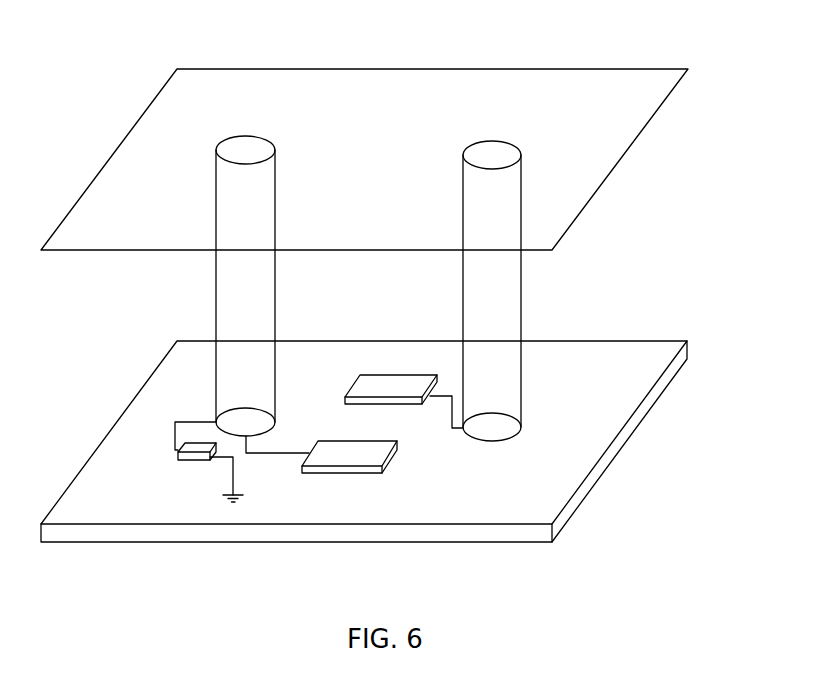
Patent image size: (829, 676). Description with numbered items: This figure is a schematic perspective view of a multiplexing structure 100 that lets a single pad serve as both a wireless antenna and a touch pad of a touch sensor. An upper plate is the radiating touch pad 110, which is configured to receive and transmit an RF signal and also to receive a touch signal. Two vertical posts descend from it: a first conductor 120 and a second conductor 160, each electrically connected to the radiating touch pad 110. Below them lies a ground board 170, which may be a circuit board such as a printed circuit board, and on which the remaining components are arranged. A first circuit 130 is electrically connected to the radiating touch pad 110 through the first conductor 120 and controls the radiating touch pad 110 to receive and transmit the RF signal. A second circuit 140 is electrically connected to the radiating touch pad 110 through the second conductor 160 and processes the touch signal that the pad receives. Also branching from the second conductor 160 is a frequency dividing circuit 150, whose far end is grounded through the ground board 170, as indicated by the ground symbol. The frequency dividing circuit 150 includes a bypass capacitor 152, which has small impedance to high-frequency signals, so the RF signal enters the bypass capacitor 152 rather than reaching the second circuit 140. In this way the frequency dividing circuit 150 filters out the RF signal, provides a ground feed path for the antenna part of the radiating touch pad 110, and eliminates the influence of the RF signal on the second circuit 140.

The multiplexing structure 100 is at (389, 52).
The radiating touch pad 110 is at (580, 168).
The first conductor 120 is at (482, 313).
The first circuit 130 is at (392, 385).
The second circuit 140 is at (373, 457).
The frequency dividing circuit 150 is at (284, 499).
The bypass capacitor 152 is at (197, 460).
The second conductor 160 is at (244, 305).
The ground board 170 is at (569, 372).